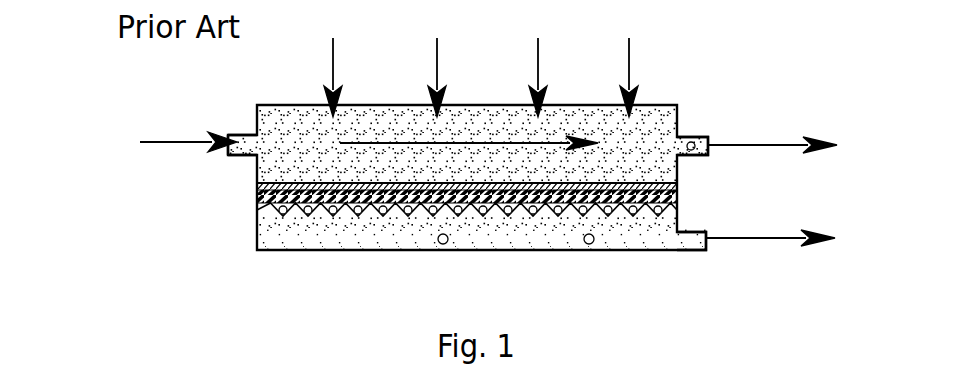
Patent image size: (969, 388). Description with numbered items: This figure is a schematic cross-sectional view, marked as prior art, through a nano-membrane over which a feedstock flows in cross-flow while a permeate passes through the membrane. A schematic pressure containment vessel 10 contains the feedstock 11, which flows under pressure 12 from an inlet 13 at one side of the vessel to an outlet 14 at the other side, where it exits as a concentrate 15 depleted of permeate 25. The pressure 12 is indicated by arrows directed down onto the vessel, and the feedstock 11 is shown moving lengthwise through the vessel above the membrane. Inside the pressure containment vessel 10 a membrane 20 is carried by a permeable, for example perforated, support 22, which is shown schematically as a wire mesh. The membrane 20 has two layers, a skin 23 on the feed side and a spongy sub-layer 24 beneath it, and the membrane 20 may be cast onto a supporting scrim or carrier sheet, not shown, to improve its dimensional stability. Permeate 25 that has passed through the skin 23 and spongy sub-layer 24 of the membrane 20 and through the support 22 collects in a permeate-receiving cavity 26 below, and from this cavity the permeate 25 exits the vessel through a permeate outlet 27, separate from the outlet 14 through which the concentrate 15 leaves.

The pressure containment vessel 10 is at (673, 103).
The feedstock 11 is at (138, 142).
The pressure 12 is at (333, 70).
The inlet 13 is at (236, 135).
The outlet 14 is at (706, 137).
The concentrate 15 is at (777, 147).
The membrane 20 is at (101, 150).
The support 22 is at (318, 218).
The skin 23 is at (258, 187).
The spongy sub-layer 24 is at (258, 198).
The permeate 25 is at (443, 245).
The permeate-receiving cavity 26 is at (585, 245).
The permeate outlet 27 is at (685, 243).